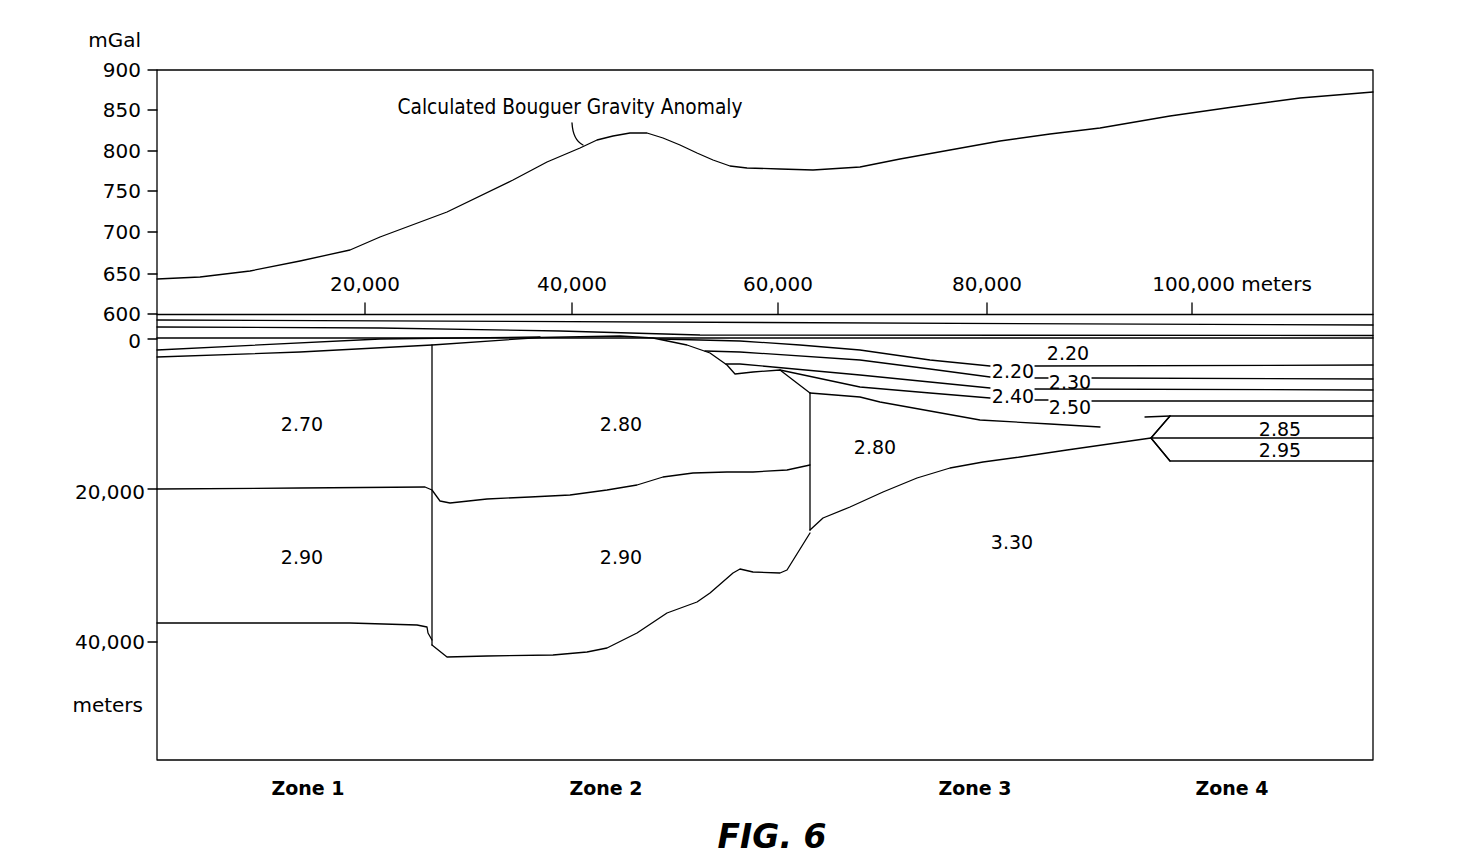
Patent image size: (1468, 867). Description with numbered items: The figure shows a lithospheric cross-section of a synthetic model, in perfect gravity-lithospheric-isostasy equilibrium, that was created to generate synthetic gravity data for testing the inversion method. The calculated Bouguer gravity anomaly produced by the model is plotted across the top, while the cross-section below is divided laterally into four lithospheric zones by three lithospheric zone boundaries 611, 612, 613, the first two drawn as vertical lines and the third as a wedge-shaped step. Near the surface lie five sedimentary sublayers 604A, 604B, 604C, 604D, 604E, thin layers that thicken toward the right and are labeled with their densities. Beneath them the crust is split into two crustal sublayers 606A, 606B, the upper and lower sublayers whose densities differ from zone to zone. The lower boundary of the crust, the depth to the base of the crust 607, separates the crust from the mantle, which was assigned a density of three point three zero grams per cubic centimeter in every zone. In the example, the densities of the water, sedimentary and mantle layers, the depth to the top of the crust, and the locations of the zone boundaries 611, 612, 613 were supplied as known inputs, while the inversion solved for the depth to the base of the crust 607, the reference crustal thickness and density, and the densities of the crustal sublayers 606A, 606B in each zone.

The sedimentary sublayer 604A is at (1365, 372).
The sedimentary sublayer 604B is at (1365, 387).
The sedimentary sublayer 604C is at (1365, 395).
The sedimentary sublayer 604D is at (1363, 407).
The sedimentary sublayer 604E is at (978, 417).
The crustal sublayer 606A is at (1363, 425).
The crustal sublayer 606B is at (1363, 450).
The depth to the base of the crust 607 is at (736, 547).
The lithospheric zone boundary 611 is at (417, 513).
The lithospheric zone boundary 612 is at (820, 486).
The lithospheric zone boundary 613 is at (1147, 448).